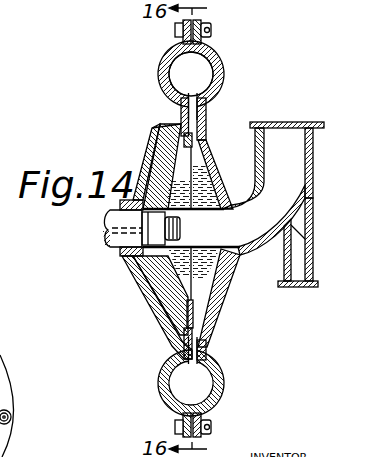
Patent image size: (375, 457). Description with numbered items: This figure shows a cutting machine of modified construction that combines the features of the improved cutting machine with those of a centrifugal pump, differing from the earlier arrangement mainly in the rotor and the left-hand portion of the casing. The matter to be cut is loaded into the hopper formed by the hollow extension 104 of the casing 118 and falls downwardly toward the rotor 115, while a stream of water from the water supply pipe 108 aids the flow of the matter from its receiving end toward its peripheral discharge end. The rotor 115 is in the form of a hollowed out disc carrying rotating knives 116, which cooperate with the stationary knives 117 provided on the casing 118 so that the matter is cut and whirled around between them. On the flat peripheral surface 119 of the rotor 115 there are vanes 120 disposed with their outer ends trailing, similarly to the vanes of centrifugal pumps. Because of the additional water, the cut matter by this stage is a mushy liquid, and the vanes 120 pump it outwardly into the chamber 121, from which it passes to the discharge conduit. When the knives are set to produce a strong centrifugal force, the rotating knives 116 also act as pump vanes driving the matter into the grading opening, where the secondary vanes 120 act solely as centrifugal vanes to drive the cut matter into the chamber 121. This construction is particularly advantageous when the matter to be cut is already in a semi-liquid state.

The hollow extension 104 is at (314, 176).
The water supply pipe 108 is at (313, 254).
The rotor 115 is at (168, 300).
The rotating knives 116 is at (191, 173).
The stationary knives 117 is at (214, 284).
The casing 118 is at (224, 54).
The flat peripheral surface 119 is at (172, 132).
The vanes 120 is at (207, 126).
The chamber 121 is at (178, 72).